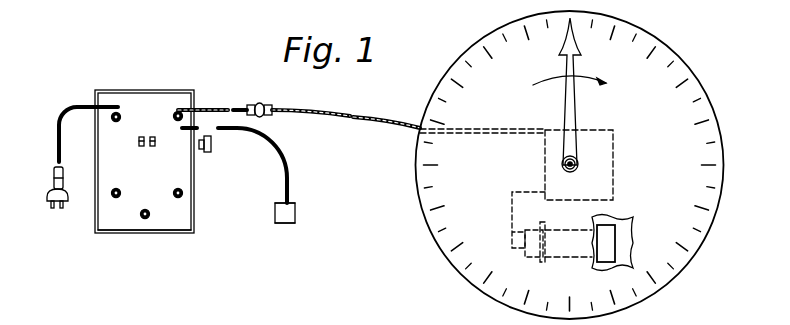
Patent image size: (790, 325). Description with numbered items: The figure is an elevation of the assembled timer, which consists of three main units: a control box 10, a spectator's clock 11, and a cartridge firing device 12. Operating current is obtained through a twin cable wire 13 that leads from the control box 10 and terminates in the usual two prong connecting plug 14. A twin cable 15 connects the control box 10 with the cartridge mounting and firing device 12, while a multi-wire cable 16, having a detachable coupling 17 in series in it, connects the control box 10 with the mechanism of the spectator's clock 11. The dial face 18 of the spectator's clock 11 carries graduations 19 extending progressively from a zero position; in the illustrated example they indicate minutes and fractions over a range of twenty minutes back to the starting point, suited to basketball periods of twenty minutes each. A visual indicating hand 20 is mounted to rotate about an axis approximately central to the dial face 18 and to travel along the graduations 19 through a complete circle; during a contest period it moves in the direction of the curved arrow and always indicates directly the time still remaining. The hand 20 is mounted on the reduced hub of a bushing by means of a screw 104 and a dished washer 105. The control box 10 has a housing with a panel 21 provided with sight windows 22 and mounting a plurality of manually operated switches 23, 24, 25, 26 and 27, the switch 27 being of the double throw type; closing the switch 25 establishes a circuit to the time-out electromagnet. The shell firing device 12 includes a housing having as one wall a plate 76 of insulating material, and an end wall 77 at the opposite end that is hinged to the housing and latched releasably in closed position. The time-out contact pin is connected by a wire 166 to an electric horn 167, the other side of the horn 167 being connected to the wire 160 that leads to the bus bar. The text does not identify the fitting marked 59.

The control box 10 is at (172, 90).
The spectator's clock 11 is at (437, 243).
The cartridge firing device 12 is at (297, 210).
The twin cable wire 13 is at (56, 113).
The two prong connecting plug 14 is at (48, 190).
The twin cable 15 is at (288, 160).
The multi-wire cable 16 is at (385, 101).
The detachable coupling 17 is at (270, 106).
The dial face 18 is at (677, 100).
The graduations 19 is at (703, 163).
The visual indicating hand 20 is at (573, 118).
The panel 21 is at (138, 226).
The sight windows 22 is at (146, 149).
The manually operated switch 23 is at (182, 112).
The manually operated switch 24 is at (120, 112).
The manually operated switch 25 is at (113, 196).
The manually operated switch 26 is at (147, 219).
The double throw switch 27 is at (183, 193).
The connector socket 59 is at (212, 142).
The plate of insulating material 76 is at (285, 212).
The end wall 77 is at (283, 223).
The screw 104 is at (580, 170).
The dished washer 105 is at (578, 158).
The wire 160 is at (510, 222).
The wire 166 is at (523, 189).
The electric horn 167 is at (608, 240).